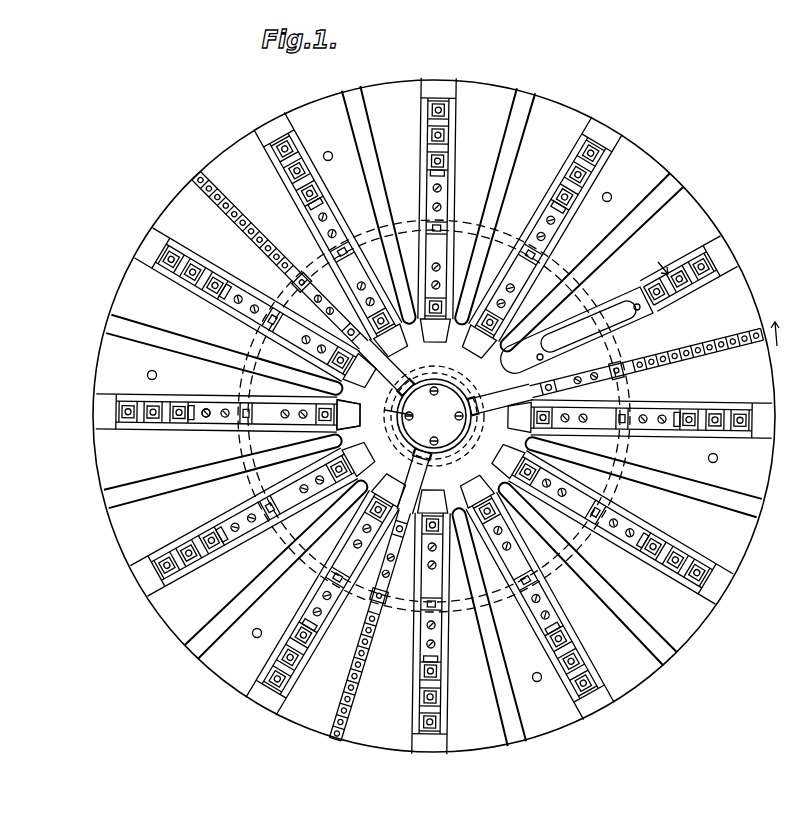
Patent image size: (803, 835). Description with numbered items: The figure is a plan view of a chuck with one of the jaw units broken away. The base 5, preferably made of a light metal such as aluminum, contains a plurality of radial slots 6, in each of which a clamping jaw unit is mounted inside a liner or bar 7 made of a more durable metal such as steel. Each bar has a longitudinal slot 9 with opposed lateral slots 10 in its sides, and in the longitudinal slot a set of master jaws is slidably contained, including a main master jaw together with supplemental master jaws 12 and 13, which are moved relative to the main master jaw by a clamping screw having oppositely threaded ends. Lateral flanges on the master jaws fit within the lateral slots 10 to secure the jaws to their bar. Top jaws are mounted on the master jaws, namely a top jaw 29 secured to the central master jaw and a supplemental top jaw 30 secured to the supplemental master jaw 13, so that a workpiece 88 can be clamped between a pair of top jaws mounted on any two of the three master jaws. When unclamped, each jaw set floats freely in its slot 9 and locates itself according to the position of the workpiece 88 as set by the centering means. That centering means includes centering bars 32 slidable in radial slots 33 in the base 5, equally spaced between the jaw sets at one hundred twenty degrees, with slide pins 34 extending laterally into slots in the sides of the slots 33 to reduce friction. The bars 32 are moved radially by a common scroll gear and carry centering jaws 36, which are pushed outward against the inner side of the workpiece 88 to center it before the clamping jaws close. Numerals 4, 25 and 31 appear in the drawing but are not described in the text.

The section line 4- 4 is at (450, 407).
The base 5 is at (165, 618).
The radial slots 6 is at (420, 416).
The liner bar 7 is at (719, 305).
The longitudinal slot 9 is at (674, 292).
The lateral slots 10 is at (97, 325).
The supplemental master jaw 12 is at (702, 287).
The supplemental master jaw 13 is at (360, 455).
The end cap 25 is at (95, 418).
The top jaw 29 is at (211, 404).
The supplemental top jaw 30 is at (263, 405).
The inner end block 31 is at (354, 414).
The centering bars 32 is at (438, 375).
The radial slots 33 is at (243, 235).
The slide pins 34 is at (474, 447).
The centering jaws 36 is at (279, 294).
The workpiece 88 is at (243, 437).